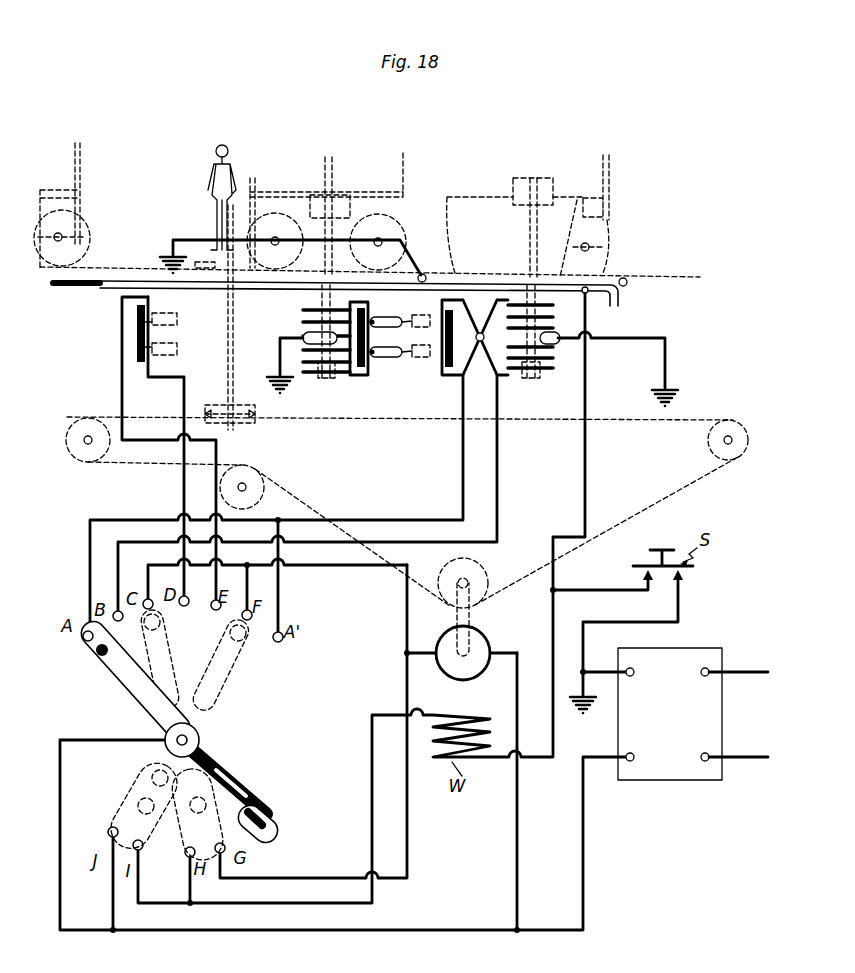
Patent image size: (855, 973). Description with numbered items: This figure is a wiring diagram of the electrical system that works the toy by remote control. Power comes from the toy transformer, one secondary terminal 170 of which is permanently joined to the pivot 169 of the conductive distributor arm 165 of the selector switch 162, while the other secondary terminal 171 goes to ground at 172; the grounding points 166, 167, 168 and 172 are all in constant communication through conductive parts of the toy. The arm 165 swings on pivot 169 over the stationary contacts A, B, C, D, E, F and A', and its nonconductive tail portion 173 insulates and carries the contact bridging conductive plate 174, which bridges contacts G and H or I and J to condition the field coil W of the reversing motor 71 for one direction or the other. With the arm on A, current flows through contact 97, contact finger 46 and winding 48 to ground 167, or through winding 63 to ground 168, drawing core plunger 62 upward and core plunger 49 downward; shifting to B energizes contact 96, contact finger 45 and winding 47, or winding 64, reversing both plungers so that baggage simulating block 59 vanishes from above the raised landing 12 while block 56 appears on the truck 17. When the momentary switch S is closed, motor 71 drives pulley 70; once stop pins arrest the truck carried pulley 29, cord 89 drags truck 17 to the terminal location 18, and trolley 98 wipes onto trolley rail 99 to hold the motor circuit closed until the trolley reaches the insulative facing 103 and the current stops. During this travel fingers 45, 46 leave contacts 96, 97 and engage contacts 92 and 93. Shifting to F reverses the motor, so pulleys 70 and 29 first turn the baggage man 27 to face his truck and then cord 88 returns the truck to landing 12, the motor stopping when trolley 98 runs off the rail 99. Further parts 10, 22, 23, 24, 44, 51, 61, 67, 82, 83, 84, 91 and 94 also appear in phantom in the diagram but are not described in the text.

The base 10 is at (668, 276).
The raised landing 12 is at (482, 197).
The truck 17 is at (645, 181).
The terminal location 18 is at (98, 270).
The wheels 22 is at (326, 241).
The platform 23 is at (203, 255).
The rod 24 is at (233, 344).
The baggage man figure 27 is at (218, 171).
The truck carried pulley 29 is at (255, 420).
The relay armature 44 is at (374, 338).
The contact finger 45 is at (382, 318).
The contact finger 46 is at (390, 357).
The magnet winding 47 is at (308, 316).
The magnet winding 48 is at (312, 378).
The core plunger 49 is at (334, 378).
The rod 51 is at (330, 202).
The baggage simulating block 56 is at (317, 195).
The baggage simulating block 59 is at (548, 184).
The rod 61 is at (530, 237).
The core plunger 62 is at (525, 298).
The magnet winding 63 is at (555, 316).
The magnet winding 64 is at (550, 370).
The belt 67 is at (476, 622).
The pulley 70 is at (490, 575).
The motor 71 is at (462, 653).
The pulley 82 is at (746, 443).
The pulley 83 is at (258, 480).
The pulley 84 is at (72, 455).
The cord 88 is at (323, 513).
The cord 89 is at (603, 531).
The relay 91 is at (155, 330).
The contact 92 is at (150, 311).
The contact 93 is at (154, 354).
The contact 94 is at (433, 338).
The contact 96 is at (432, 320).
The contact 97 is at (432, 364).
The trolley 98 is at (636, 266).
The trolley rail 99 is at (195, 287).
The insulative facing 103 is at (78, 290).
The selector switch 162 is at (230, 722).
The distributor arm 165 is at (130, 688).
The grounding point 166 is at (170, 242).
The grounding point 167 is at (266, 388).
The grounding point 168 is at (678, 388).
The pivot 169 is at (202, 739).
The secondary terminal 170 is at (636, 761).
The secondary terminal 171 is at (636, 670).
The grounding point 172 is at (592, 716).
The tail portion 173 is at (230, 774).
The contact bridging conductive plate 174 is at (273, 824).